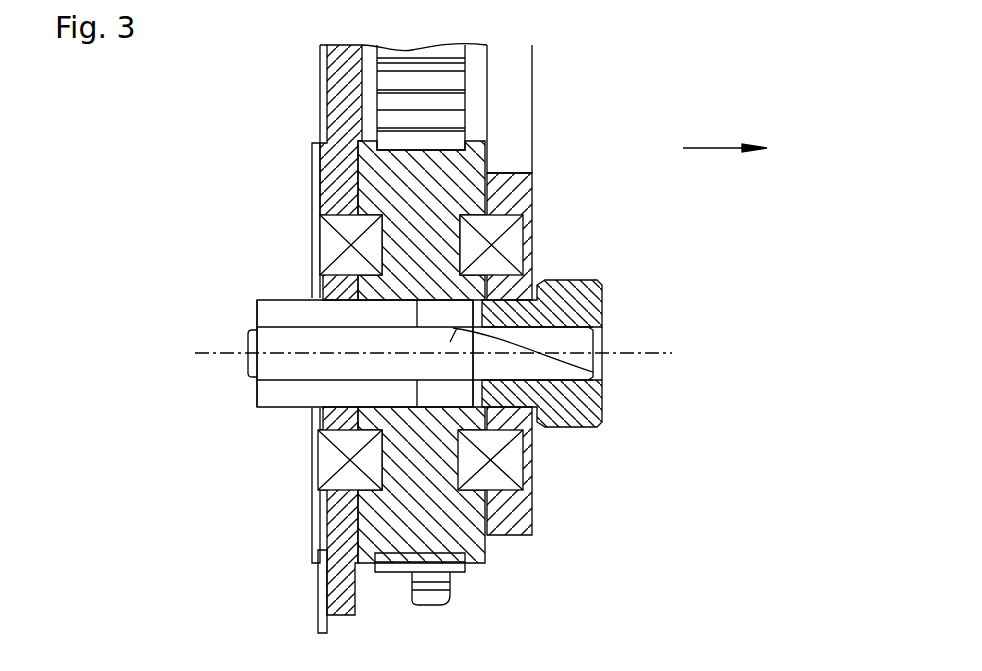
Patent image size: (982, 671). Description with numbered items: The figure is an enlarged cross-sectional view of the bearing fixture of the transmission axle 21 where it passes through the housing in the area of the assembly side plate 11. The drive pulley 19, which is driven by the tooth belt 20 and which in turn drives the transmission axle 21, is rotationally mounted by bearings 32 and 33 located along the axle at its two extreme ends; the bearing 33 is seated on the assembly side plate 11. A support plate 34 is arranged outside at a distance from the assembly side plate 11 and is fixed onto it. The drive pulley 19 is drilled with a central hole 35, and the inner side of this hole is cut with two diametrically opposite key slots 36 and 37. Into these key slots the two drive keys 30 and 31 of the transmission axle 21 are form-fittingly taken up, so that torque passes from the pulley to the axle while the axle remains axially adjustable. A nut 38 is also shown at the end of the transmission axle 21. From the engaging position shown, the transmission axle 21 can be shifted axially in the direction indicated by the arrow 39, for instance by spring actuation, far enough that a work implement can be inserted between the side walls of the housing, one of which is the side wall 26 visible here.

The assembly side plate 11 is at (340, 87).
The side wall 26 is at (325, 115).
The drive pulley 19 is at (442, 498).
The support plate 34 is at (520, 190).
The pulley belt 20 is at (455, 100).
The bearing 33 is at (320, 232).
The bearing 32 is at (512, 242).
The key slot 36 is at (520, 430).
The nut 38 is at (587, 297).
The drive key 30 is at (282, 397).
The drive key 31 is at (267, 305).
The key slot 37 is at (453, 313).
The transmission axle 21 is at (267, 360).
The hole 35 is at (603, 366).
The arrow 39 is at (715, 147).